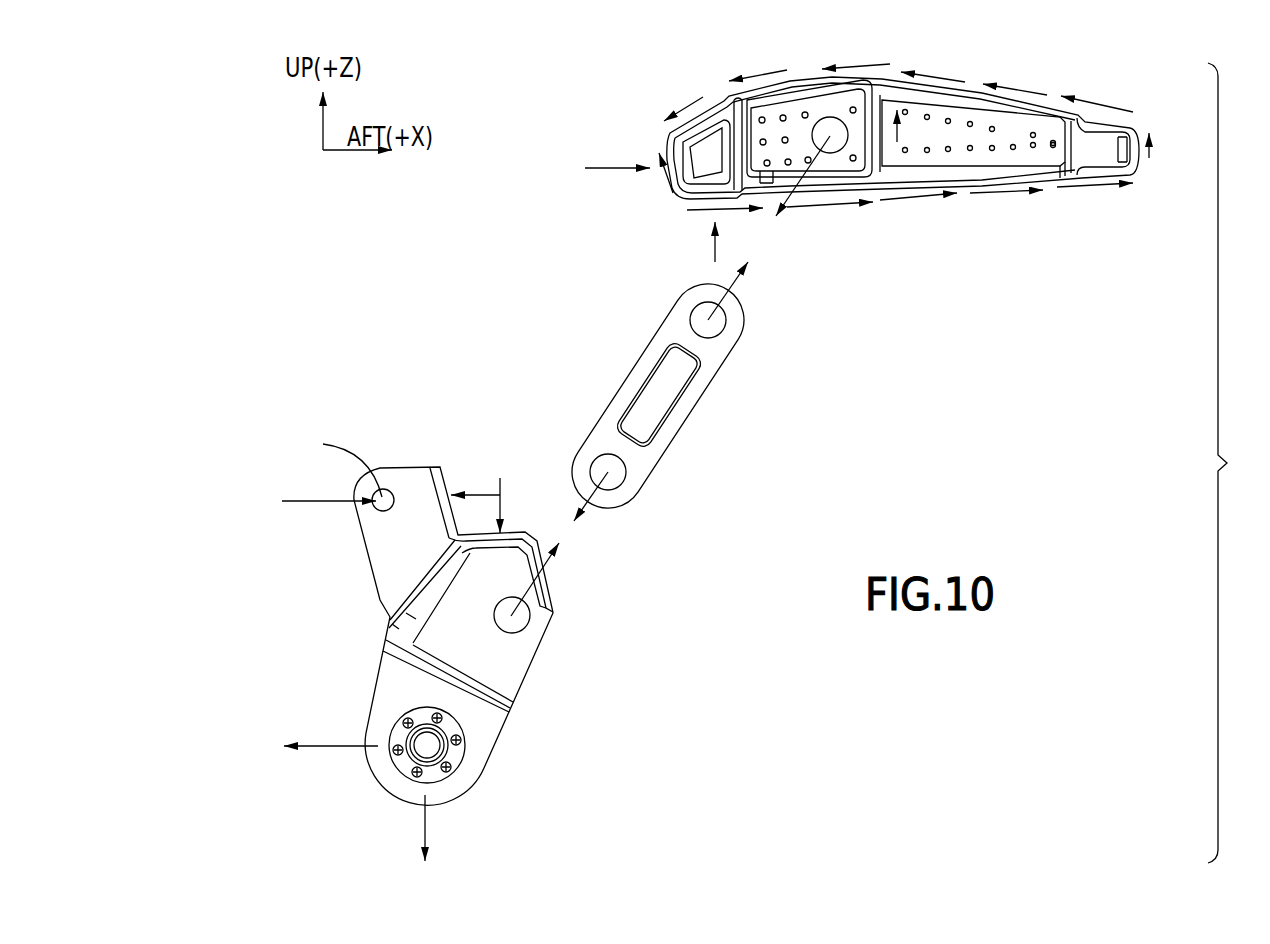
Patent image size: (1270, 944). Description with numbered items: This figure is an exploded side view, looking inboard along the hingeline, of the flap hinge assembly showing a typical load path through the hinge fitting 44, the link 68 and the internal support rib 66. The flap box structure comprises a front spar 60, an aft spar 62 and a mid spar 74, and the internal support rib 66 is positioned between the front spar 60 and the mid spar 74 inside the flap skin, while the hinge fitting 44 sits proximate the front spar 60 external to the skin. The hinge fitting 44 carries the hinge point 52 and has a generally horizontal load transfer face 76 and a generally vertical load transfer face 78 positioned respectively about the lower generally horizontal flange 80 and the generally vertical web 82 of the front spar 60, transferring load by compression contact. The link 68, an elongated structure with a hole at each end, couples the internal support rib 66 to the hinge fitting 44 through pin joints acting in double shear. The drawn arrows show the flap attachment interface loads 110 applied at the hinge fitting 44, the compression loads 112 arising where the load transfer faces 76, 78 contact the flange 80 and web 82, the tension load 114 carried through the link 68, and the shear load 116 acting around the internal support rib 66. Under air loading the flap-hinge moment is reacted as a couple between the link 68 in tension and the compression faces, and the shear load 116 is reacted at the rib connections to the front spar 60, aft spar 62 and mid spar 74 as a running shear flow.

The hinge fitting 44 is at (400, 683).
The hinge point 52 is at (428, 745).
The front spar 60 is at (669, 145).
The aft spar 62 is at (1142, 130).
The internal support rib 66 is at (960, 127).
The link 68 is at (660, 395).
The mid spar 74 is at (873, 90).
The generally horizontal load transfer face 76 is at (513, 533).
The generally vertical load transfer face 78 is at (446, 468).
The lower generally horizontal flange 80 is at (703, 203).
The generally vertical web 82 is at (672, 184).
The flap attachment interface loads 110 is at (300, 503).
The compression loads 112 is at (606, 164).
The tension load 114 is at (780, 210).
The shear load 116 is at (1000, 194).